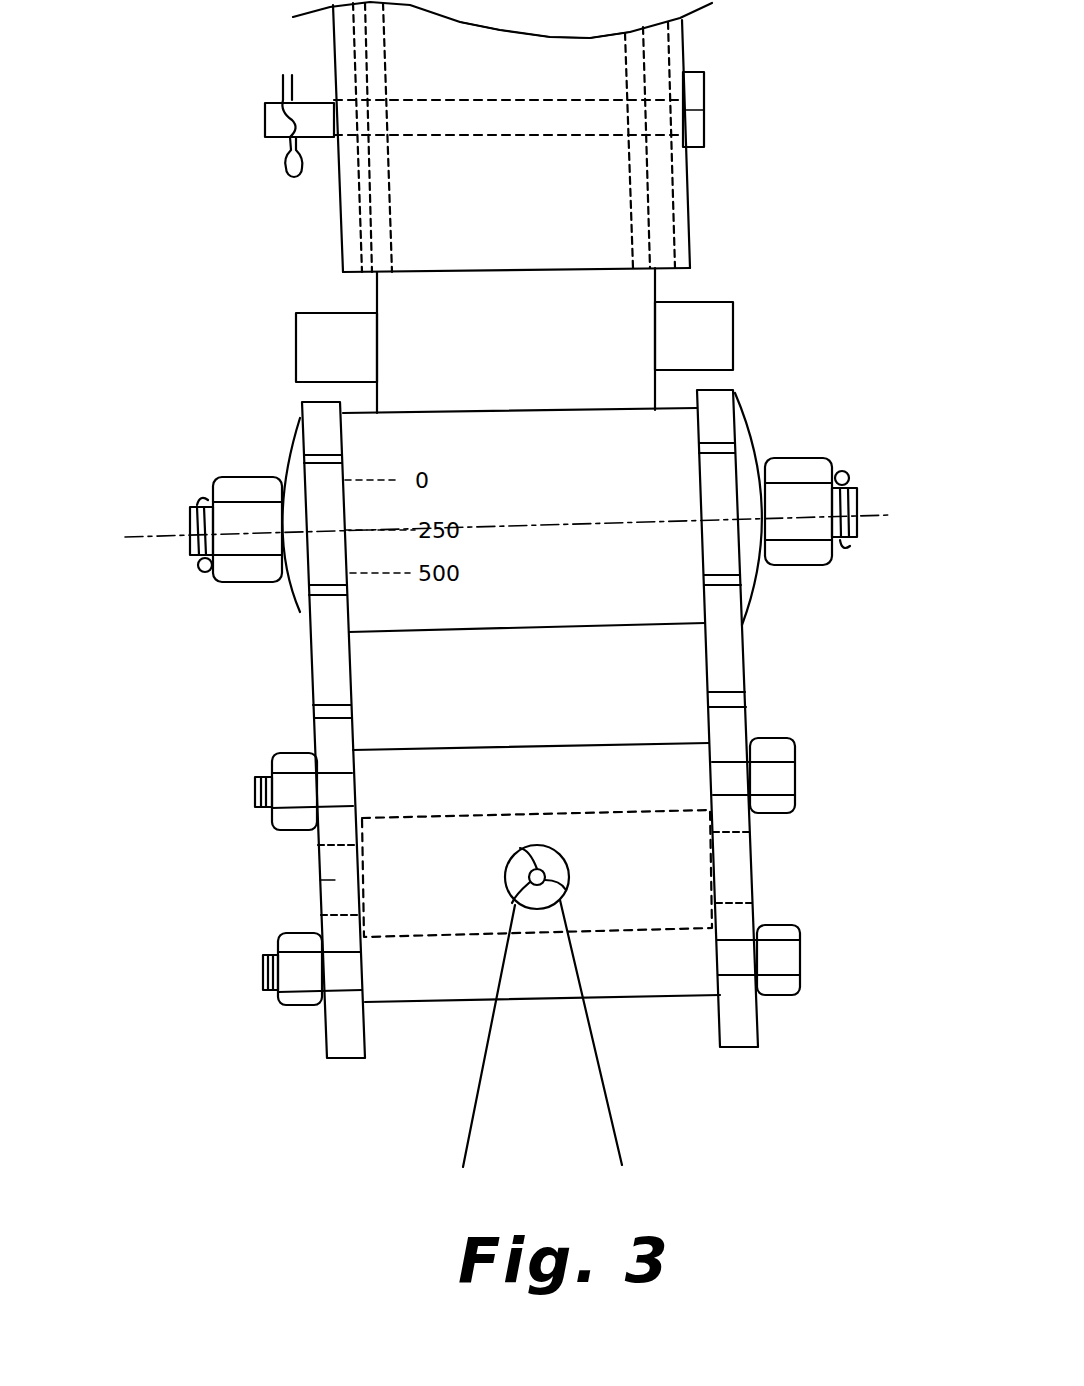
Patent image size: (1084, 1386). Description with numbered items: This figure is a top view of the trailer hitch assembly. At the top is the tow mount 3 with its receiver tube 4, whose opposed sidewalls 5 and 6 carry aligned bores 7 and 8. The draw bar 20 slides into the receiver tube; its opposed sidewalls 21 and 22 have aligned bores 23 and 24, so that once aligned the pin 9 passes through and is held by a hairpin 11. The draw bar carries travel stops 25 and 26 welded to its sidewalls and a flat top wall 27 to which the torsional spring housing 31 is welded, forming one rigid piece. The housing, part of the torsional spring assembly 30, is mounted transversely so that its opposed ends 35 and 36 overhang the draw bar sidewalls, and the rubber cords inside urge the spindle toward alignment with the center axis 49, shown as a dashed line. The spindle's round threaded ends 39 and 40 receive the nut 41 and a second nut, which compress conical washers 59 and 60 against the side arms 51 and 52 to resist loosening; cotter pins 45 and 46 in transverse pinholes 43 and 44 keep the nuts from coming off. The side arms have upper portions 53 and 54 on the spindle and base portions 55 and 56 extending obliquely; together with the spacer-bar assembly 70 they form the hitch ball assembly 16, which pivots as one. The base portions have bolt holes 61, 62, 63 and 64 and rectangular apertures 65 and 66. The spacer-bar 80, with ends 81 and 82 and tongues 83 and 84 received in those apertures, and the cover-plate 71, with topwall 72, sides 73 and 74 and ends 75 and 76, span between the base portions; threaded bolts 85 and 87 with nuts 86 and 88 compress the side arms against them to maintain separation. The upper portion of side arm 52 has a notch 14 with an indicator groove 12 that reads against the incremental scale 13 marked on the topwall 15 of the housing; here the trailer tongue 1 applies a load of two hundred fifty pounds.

The trailer tongue 1 is at (470, 1117).
The tow mount 3 is at (688, 44).
The receiver tube 4 is at (633, 240).
The sidewall 5 is at (690, 205).
The sidewall 6 is at (340, 237).
The bore 7 is at (690, 92).
The bore 8 is at (345, 100).
The pin 9 is at (705, 135).
The hairpin 11 is at (285, 170).
The indicator groove 12 is at (327, 527).
The incremental scale 13 is at (531, 697).
The notch 14 is at (327, 592).
The topwall 15 is at (524, 520).
The hitch ball assembly 16 is at (748, 645).
The draw bar 20 is at (405, 284).
The sidewall 21 is at (655, 290).
The sidewall 22 is at (375, 297).
The bore 23 is at (545, 43).
The bore 24 is at (385, 100).
The travel stop 25 is at (733, 340).
The travel stop 26 is at (296, 340).
The top wall 27 is at (515, 195).
The torsional spring assembly 30 is at (512, 437).
The torsional spring housing 31 is at (580, 407).
The end 35 is at (695, 410).
The end 36 is at (345, 418).
The round threaded end 39 is at (855, 505).
The round threaded end 40 is at (195, 515).
The nut 41 is at (800, 458).
The transverse pinhole 43 is at (845, 488).
The transverse pinhole 44 is at (200, 510).
The cotter pin 45 is at (848, 548).
The cotter pin 46 is at (200, 500).
The center axis 49 is at (508, 526).
The side arm 51 is at (745, 683).
The side arm 52 is at (315, 692).
The upper portion 53 is at (735, 392).
The upper portion 54 is at (305, 402).
The base portion 55 is at (755, 1047).
The base portion 56 is at (335, 1058).
The conical washer 59 is at (752, 437).
The conical washer 60 is at (290, 445).
The bolt hole 61 is at (760, 975).
The bolt hole 62 is at (345, 985).
The bolt hole 63 is at (727, 760).
The bolt hole 64 is at (335, 775).
The rectangular aperture 65 is at (750, 832).
The rectangular aperture 66 is at (345, 845).
The spacer-bar assembly 70 is at (625, 999).
The cover-plate 71 is at (655, 997).
The topwall 72 is at (513, 757).
The side 73 is at (685, 997).
The side 74 is at (623, 742).
The end 75 is at (712, 777).
The end 76 is at (365, 1003).
The spacer-bar 80 is at (537, 873).
The end 81 is at (717, 918).
The end 82 is at (355, 922).
The tongue 83 is at (755, 878).
The tongue 84 is at (330, 880).
The threaded bolt 85 is at (800, 965).
The nut 86 is at (320, 1005).
The threaded bolt 87 is at (793, 770).
The nut 88 is at (275, 760).